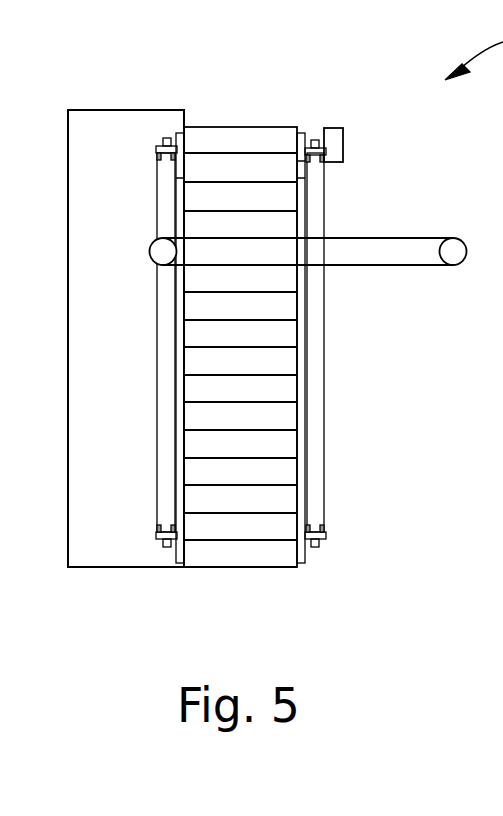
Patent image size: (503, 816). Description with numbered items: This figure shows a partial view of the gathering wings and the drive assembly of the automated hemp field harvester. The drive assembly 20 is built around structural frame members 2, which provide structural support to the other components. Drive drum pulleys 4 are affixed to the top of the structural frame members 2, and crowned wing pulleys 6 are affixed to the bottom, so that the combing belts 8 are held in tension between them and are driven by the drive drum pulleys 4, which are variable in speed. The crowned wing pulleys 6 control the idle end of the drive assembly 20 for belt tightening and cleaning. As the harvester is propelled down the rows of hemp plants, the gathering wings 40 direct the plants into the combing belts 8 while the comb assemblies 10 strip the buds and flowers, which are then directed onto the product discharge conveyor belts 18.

The structural frame members 2 is at (316, 412).
The drive drum pulleys 4 is at (343, 137).
The crowned wing pulleys 6 is at (318, 533).
The combing belts 8 is at (242, 127).
The comb assemblies 10 is at (241, 569).
The product discharge conveyor belts 18 is at (386, 238).
The drive assembly 20 is at (408, 311).
The gathering wings 40 is at (128, 110).